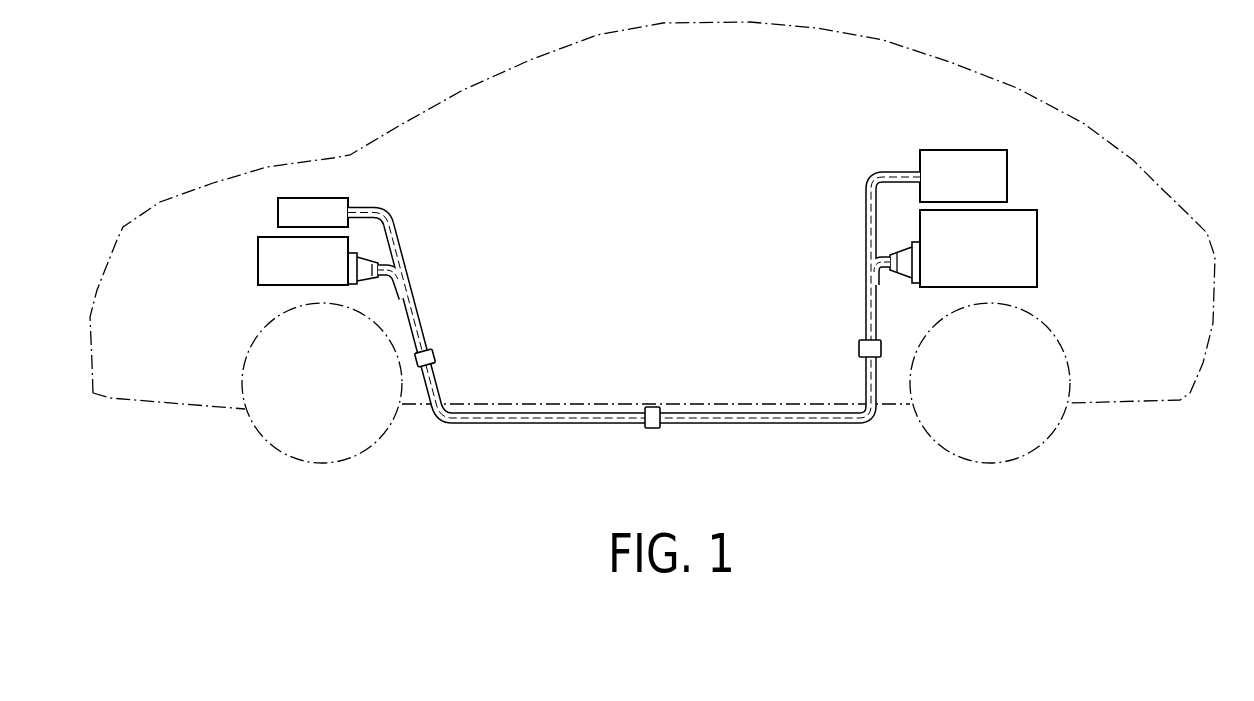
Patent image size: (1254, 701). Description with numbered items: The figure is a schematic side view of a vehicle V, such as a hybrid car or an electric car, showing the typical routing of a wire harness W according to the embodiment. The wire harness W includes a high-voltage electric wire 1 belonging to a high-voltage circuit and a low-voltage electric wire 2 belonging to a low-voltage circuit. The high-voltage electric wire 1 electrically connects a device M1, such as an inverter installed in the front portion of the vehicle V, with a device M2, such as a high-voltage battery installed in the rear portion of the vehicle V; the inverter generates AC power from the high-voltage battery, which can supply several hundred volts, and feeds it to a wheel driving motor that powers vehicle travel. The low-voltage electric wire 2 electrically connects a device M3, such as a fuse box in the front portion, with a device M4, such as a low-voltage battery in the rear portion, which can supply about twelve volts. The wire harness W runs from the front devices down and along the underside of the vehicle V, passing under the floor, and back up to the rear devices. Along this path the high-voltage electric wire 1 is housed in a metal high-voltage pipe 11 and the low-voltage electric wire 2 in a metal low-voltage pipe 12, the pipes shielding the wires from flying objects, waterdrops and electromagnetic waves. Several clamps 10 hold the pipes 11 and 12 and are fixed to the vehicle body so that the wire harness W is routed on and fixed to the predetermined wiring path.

The high-voltage electric wire 1 is at (634, 331).
The low-voltage electric wire 2 is at (372, 205).
The clamp 10 is at (434, 352).
The high-voltage pipe 11 is at (733, 425).
The low-voltage pipe 12 is at (399, 228).
The device M1 is at (258, 258).
The device M2 is at (1037, 248).
The device M3 is at (278, 212).
The device M4 is at (1007, 178).
The vehicle V is at (950, 62).
The wire harness W is at (827, 161).